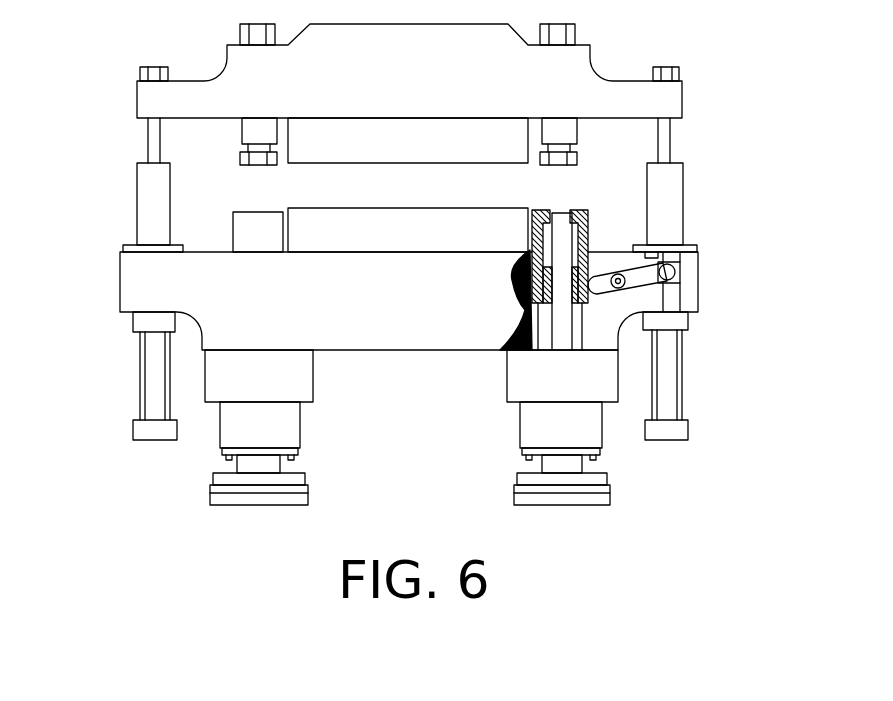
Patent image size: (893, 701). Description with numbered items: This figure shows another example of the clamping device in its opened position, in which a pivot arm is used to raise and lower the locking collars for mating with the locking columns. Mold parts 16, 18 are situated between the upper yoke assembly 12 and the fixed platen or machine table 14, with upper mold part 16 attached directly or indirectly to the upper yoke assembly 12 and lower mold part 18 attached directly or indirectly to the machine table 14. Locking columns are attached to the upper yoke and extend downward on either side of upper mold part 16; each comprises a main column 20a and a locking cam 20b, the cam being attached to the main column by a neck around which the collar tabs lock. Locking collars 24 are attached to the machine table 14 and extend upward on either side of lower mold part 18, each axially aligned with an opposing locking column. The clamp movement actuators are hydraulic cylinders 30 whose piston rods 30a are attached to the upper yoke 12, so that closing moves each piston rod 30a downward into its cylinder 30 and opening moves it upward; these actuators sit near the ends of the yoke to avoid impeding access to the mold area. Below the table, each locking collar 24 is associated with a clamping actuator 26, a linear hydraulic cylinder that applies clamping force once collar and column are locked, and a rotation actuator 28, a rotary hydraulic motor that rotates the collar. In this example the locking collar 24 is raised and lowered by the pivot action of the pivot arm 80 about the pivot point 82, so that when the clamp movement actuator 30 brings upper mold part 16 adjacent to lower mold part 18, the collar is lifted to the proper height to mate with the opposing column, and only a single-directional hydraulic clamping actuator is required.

The upper yoke assembly 12 is at (227, 90).
The fixed platen or machine table 14 is at (442, 320).
The upper mold part 16 is at (394, 153).
The lower mold part 18 is at (457, 248).
The main column 20a is at (255, 129).
The locking cam 20b is at (247, 162).
The locking collar 24 is at (275, 248).
The clamping actuator 26 is at (272, 418).
The rotation actuator 28 is at (278, 491).
The hydraulic cylinder 30 is at (133, 378).
The piston rod 30a is at (152, 143).
The pivot arm 80 is at (642, 278).
The pivot point 82 is at (618, 288).